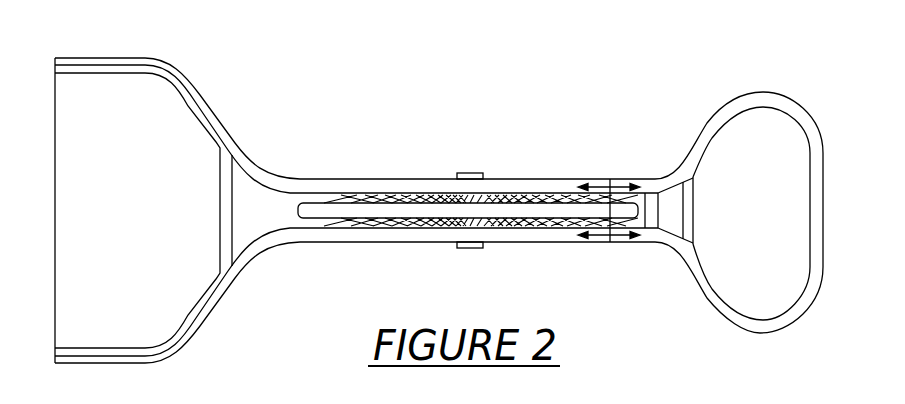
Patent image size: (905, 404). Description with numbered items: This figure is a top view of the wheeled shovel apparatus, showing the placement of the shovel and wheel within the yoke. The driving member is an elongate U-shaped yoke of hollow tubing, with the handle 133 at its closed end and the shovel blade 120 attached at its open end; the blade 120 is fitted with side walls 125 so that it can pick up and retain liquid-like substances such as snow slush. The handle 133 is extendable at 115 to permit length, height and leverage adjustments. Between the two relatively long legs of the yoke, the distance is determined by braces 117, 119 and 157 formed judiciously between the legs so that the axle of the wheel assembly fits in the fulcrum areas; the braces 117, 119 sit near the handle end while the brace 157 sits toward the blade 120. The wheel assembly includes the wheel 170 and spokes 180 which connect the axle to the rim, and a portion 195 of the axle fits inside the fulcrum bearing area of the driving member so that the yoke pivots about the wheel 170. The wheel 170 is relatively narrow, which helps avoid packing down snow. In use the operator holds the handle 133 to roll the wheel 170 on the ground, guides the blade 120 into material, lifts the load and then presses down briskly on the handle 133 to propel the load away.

The shovel blade 120 is at (98, 90).
The side walls 125 is at (178, 72).
The brace 157 is at (233, 172).
The wheel 170 is at (318, 210).
The spokes 180 is at (383, 194).
The portion of axle 195 is at (472, 173).
The extendable portion of handle 115 is at (608, 185).
The brace 119 is at (650, 198).
The brace 117 is at (688, 188).
The handle 133 is at (762, 98).